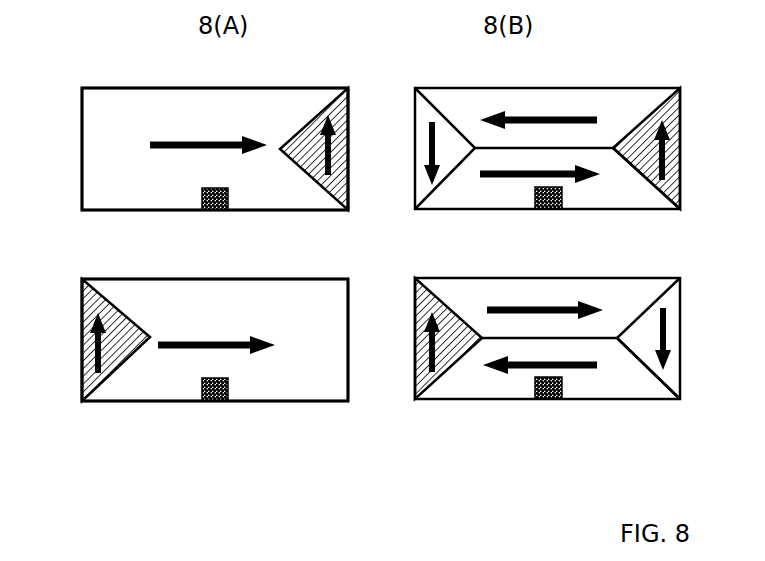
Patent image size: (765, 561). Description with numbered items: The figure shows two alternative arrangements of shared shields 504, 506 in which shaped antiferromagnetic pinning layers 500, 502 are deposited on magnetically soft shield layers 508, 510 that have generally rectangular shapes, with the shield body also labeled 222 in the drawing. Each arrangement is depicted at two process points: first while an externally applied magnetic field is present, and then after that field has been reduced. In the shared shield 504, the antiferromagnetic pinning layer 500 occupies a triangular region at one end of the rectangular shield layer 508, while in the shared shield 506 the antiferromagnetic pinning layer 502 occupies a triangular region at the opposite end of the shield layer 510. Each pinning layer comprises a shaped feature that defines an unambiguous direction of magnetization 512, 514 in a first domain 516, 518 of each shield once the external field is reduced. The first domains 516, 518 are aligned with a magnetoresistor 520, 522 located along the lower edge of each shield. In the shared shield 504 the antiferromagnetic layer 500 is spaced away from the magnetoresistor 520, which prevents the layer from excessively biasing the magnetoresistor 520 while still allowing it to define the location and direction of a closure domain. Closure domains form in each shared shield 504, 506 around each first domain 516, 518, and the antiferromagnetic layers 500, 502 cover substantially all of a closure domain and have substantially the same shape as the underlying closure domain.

The light guide 222 is at (190, 212).
The antiferromagnetic pinning layer 500 is at (348, 157).
The antiferromagnetic pinning layer 502 is at (82, 350).
The shared shield 504 is at (78, 63).
The shared shield 506 is at (74, 264).
The magnetically soft shield layer 508 is at (110, 120).
The magnetically soft shield layer 510 is at (168, 383).
The direction of magnetization 512 is at (567, 178).
The direction of magnetization 514 is at (587, 365).
The first domain 516 is at (493, 197).
The first domain 518 is at (466, 385).
The magnetoresistor 520 is at (212, 208).
The magnetoresistor 522 is at (217, 400).